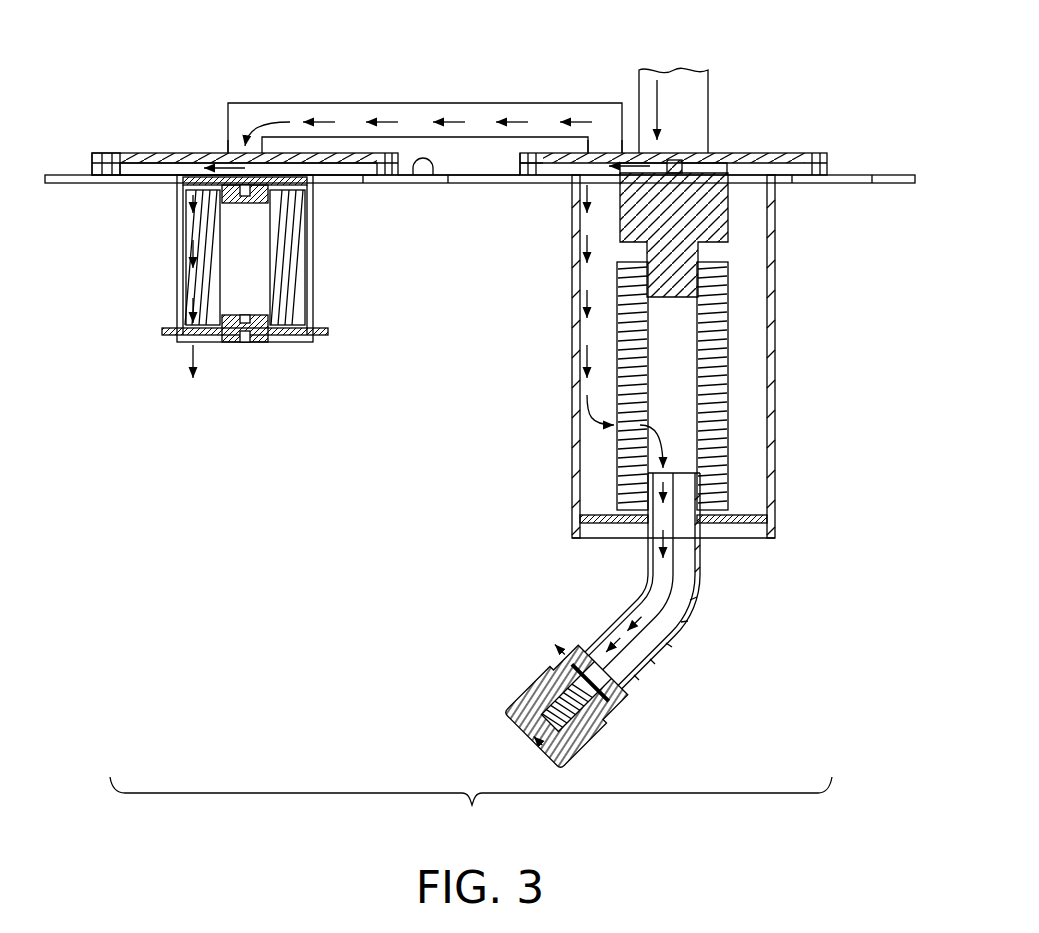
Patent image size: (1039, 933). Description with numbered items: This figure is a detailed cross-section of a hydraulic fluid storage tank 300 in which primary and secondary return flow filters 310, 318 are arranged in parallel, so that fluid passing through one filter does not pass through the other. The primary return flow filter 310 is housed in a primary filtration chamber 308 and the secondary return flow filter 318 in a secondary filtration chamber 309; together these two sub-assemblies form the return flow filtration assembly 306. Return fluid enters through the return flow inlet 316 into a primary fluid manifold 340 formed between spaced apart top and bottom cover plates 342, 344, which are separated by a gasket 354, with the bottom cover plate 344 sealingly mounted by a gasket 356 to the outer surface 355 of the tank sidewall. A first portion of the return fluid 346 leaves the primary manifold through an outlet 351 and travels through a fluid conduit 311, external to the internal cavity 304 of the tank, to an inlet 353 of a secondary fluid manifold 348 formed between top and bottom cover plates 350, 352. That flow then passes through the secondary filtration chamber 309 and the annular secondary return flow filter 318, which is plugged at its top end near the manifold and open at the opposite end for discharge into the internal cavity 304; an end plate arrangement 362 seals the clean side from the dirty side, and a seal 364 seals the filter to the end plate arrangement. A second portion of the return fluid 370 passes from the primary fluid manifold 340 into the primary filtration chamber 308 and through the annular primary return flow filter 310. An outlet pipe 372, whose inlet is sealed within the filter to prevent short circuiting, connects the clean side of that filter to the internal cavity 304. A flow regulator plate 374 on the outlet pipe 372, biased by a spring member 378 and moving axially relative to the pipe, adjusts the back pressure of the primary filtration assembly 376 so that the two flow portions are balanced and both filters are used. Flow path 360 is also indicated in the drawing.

The hydraulic fluid storage tank 300 is at (850, 130).
The internal cavity 304 is at (459, 229).
The return flow filtration assembly 306 is at (471, 805).
The primary filtration chamber 308 is at (776, 238).
The secondary filtration chamber 309 is at (315, 235).
The primary return flow filter 310 is at (722, 322).
The fluid conduit 311 is at (405, 103).
The return flow inlet 316 is at (708, 101).
The secondary return flow filter 318 is at (300, 282).
The primary fluid manifold 340 is at (697, 162).
The top cover plate 342 is at (755, 153).
The bottom cover plate 344 is at (825, 168).
The first portion of return fluid 346 is at (466, 122).
The secondary fluid manifold 348 is at (163, 158).
The top cover plate 350 is at (125, 152).
The outlet 351 is at (608, 122).
The bottom cover plate 352 is at (152, 170).
The inlet 353 is at (236, 128).
The gasket 354 is at (520, 163).
The outer surface 355 is at (428, 163).
The gasket 356 is at (525, 176).
The flow path 360 is at (575, 184).
The end plate arrangement 362 is at (325, 346).
The seal 364 is at (260, 330).
The second portion of return fluid 370 is at (612, 425).
The outlet pipe 372 is at (702, 582).
The flow regulator plate 374 is at (630, 688).
The primary filtration assembly 376 is at (820, 484).
The spring member 378 is at (600, 715).